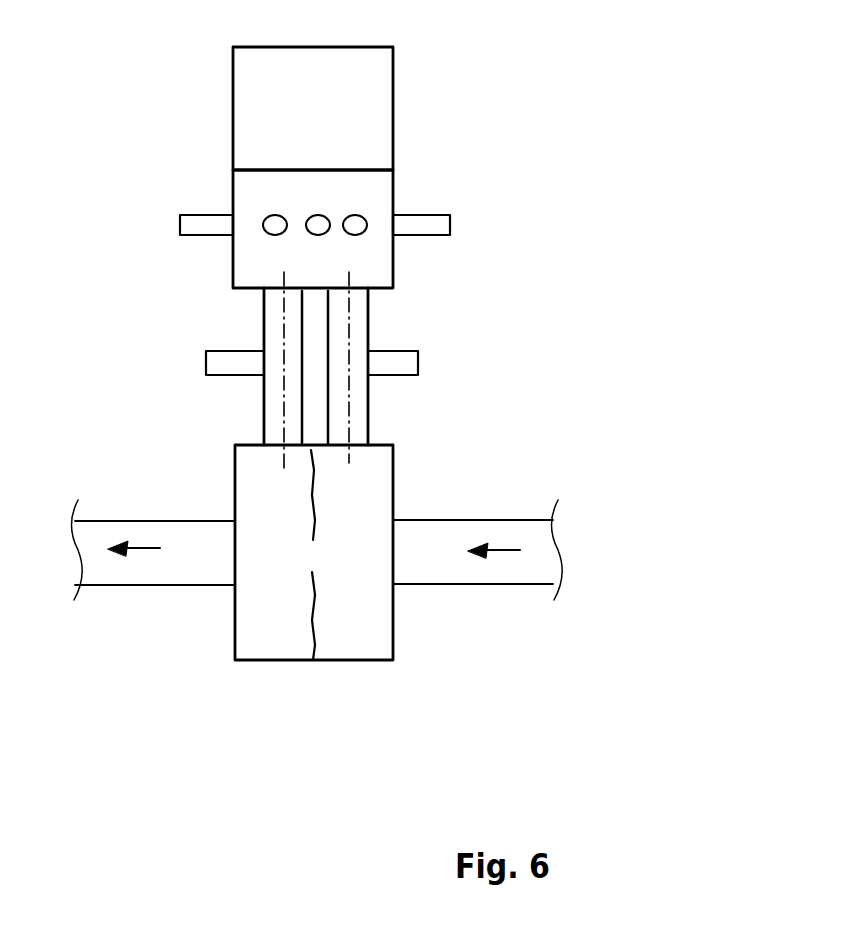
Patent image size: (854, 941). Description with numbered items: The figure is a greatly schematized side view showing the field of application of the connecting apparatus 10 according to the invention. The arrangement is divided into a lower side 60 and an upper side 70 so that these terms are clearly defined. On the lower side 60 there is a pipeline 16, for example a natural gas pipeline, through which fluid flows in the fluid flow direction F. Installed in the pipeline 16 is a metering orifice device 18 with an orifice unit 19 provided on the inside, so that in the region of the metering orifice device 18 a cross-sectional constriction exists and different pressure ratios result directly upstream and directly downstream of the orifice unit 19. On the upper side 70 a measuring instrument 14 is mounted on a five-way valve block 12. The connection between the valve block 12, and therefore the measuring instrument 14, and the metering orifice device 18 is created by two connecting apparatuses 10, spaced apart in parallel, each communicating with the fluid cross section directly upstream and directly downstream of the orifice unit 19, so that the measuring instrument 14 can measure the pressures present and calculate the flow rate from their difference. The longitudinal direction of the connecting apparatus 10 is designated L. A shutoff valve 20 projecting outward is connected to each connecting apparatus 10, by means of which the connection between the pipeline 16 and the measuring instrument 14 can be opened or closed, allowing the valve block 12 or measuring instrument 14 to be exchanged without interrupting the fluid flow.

The measuring instrument 14 is at (383, 98).
The 5-way valve block 12 is at (383, 193).
The connecting apparatus 10 is at (270, 322).
The shutoff valve 20 is at (218, 365).
The longitudinal direction L is at (285, 393).
The metering orifice device 18 is at (375, 493).
The pipeline 16 is at (188, 567).
The orifice unit 19 is at (307, 482).
The fluid flow direction F is at (148, 548).
The upper side 70 is at (656, 159).
The lower side 60 is at (664, 562).